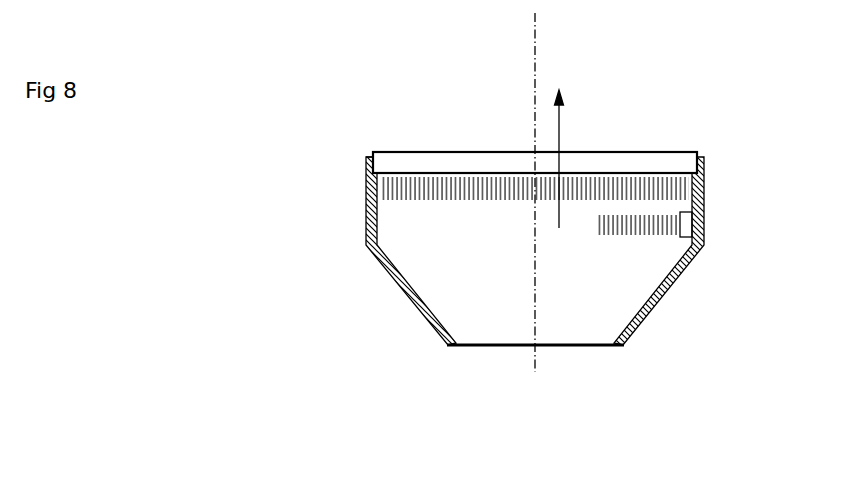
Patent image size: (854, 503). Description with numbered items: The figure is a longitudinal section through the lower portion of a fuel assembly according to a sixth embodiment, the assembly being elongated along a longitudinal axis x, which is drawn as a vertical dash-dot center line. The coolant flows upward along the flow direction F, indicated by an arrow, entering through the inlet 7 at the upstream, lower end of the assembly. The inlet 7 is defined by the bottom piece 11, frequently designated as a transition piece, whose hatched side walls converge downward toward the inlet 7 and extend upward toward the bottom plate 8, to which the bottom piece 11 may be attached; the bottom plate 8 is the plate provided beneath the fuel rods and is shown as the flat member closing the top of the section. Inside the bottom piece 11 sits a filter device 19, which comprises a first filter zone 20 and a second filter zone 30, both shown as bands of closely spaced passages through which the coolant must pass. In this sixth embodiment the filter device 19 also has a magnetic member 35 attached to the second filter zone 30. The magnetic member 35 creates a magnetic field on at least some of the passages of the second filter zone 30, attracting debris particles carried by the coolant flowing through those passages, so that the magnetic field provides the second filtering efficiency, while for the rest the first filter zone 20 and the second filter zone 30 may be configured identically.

The inlet 7 is at (503, 346).
The bottom plate 8 is at (437, 161).
The bottom piece 11 is at (397, 288).
The filter device 19 is at (368, 177).
The first filter zone 20 is at (463, 192).
The second filter zone 30 is at (612, 230).
The magnetic member 35 is at (685, 220).
The longitudinal axis x is at (536, 72).
The flow direction F is at (562, 138).